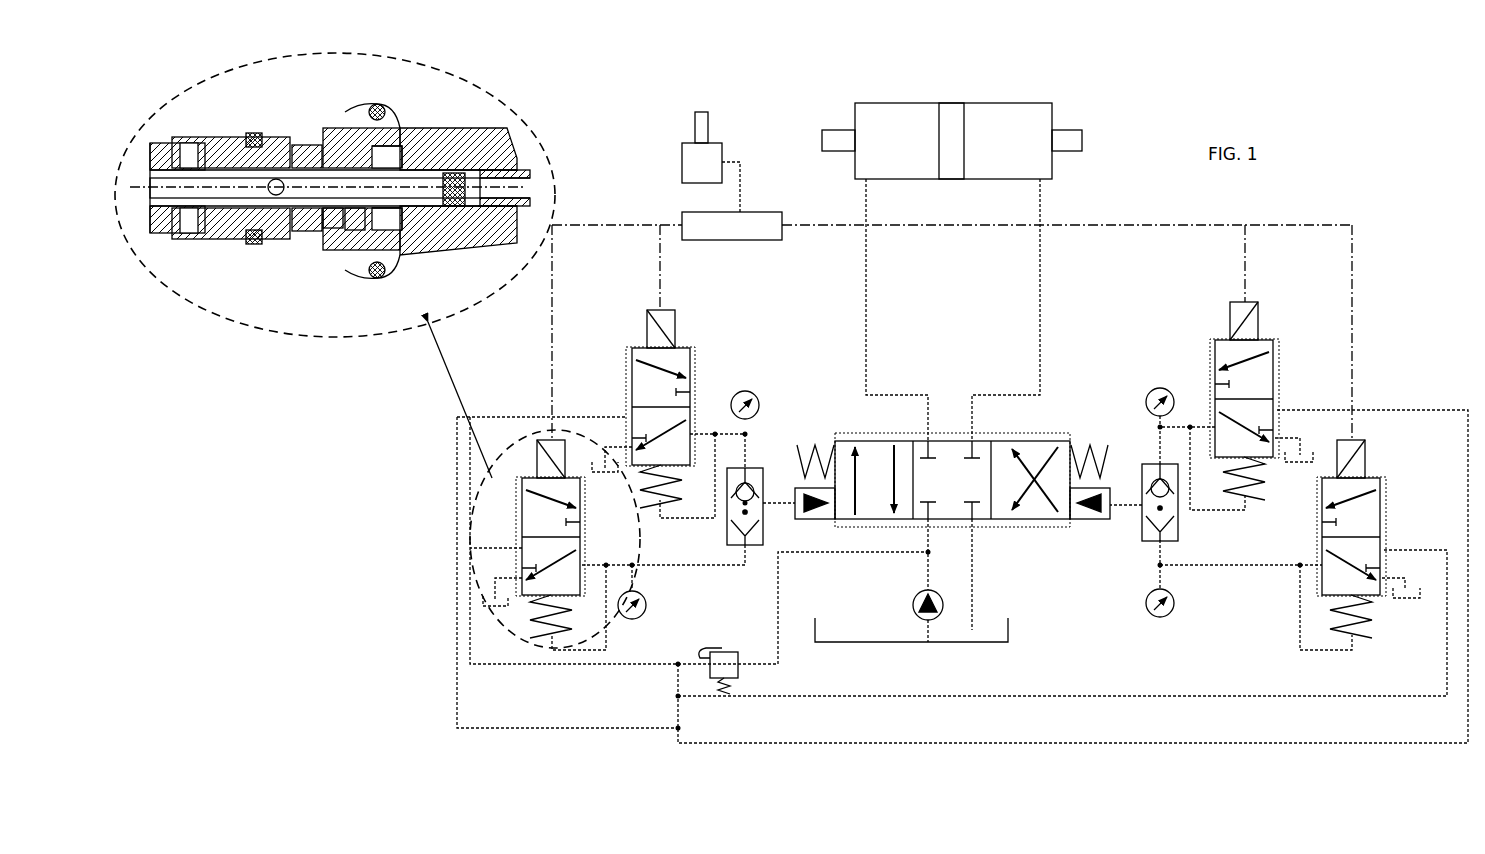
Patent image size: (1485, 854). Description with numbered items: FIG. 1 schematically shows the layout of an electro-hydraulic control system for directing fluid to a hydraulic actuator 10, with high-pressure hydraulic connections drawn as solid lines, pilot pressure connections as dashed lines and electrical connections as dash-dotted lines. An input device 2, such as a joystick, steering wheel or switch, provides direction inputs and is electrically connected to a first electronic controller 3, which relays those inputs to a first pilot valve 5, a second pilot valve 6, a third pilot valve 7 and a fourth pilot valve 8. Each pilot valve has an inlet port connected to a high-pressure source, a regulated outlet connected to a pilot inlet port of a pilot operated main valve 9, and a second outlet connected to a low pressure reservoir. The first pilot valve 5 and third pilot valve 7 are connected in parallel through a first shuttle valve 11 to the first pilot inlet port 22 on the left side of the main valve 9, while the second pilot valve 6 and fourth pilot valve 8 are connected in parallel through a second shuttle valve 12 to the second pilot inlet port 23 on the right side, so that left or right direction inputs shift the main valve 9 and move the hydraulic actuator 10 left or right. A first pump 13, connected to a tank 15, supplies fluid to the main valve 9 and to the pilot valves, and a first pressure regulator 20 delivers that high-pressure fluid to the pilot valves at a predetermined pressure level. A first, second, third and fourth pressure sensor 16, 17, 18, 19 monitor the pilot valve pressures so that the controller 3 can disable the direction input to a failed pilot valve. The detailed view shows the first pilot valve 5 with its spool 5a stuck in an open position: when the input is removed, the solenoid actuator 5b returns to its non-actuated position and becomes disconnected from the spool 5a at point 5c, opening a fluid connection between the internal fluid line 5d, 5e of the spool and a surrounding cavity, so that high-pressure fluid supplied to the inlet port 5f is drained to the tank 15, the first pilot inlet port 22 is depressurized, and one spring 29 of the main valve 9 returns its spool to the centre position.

The input device 2 is at (695, 130).
The first electronic controller 3 is at (752, 243).
The first pilot valve 5 is at (582, 532).
The spool 5a is at (150, 160).
The solenoid actuator 5b is at (508, 190).
The disconnection point 5c is at (430, 196).
The internal fluid line 5d is at (340, 228).
The internal fluid line 5e is at (378, 228).
The inlet port 5f is at (250, 150).
The second pilot valve 6 is at (1322, 527).
The third pilot valve 7 is at (690, 388).
The fourth pilot valve 8 is at (1215, 390).
The pilot operated main valve 9 is at (140, 186).
The hydraulic actuator 10 is at (822, 140).
The first shuttle valve 11 is at (727, 536).
The second shuttle valve 12 is at (1177, 535).
The first pump 13 is at (190, 136).
The tank 15 is at (312, 130).
The first pressure sensor 16 is at (647, 603).
The second pressure sensor 17 is at (1175, 606).
The third pressure sensor 18 is at (760, 406).
The fourth pressure sensor 19 is at (1148, 396).
The first pressure regulator 20 is at (735, 652).
The first pilot inlet port 22 is at (795, 517).
The second pilot inlet port 23 is at (1110, 520).
The spring 29 is at (1096, 442).